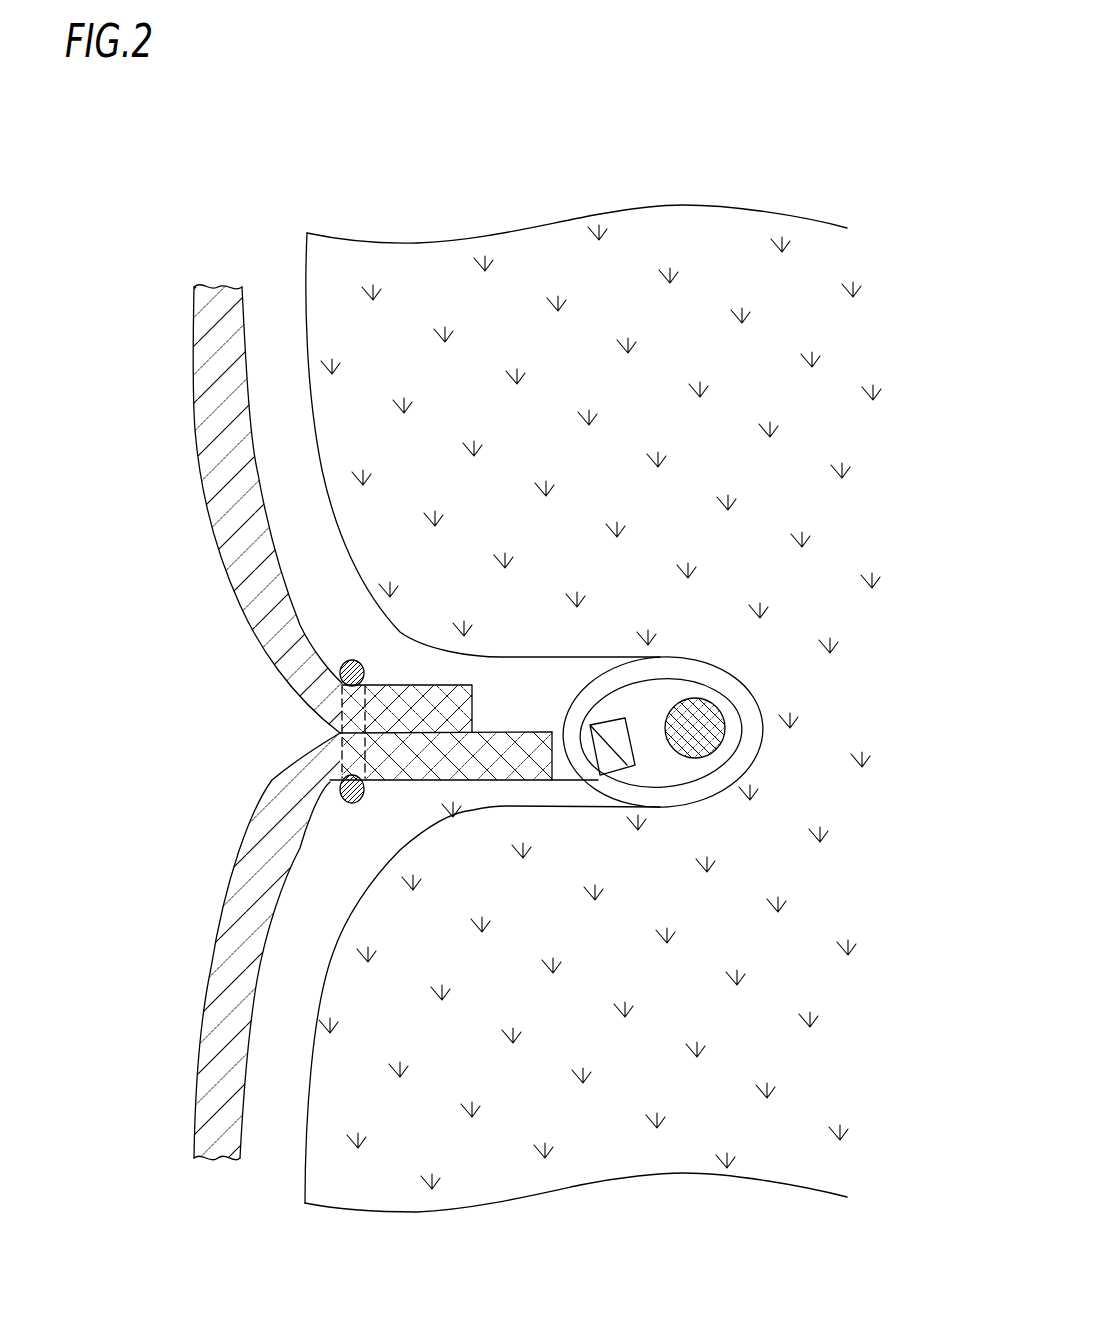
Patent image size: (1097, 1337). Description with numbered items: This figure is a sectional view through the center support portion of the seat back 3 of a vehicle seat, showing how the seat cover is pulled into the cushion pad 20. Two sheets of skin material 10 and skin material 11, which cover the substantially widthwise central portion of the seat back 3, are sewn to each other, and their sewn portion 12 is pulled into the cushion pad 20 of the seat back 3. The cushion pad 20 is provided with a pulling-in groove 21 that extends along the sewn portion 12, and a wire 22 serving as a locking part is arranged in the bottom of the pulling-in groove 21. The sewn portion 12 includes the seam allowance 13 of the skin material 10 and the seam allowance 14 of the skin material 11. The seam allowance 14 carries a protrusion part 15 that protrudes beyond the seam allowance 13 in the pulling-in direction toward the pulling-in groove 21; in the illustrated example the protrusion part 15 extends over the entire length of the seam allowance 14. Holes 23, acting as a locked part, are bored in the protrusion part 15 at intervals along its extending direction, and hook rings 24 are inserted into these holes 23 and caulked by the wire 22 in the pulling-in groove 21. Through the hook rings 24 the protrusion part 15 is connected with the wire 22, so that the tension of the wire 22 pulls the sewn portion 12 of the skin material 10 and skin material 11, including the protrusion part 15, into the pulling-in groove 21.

The seat back 3 is at (633, 640).
The skin material 10 is at (197, 413).
The skin material 11 is at (197, 1102).
The sewn portion 12 is at (338, 733).
The seam allowance 13 is at (428, 697).
The seam allowance 14 is at (410, 781).
The protrusion part 15 is at (527, 768).
The cushion pad 20 is at (577, 247).
The pulling-in groove 21 is at (528, 657).
The wire 22 is at (708, 727).
The holes 23 is at (583, 770).
The hook rings 24 is at (677, 783).